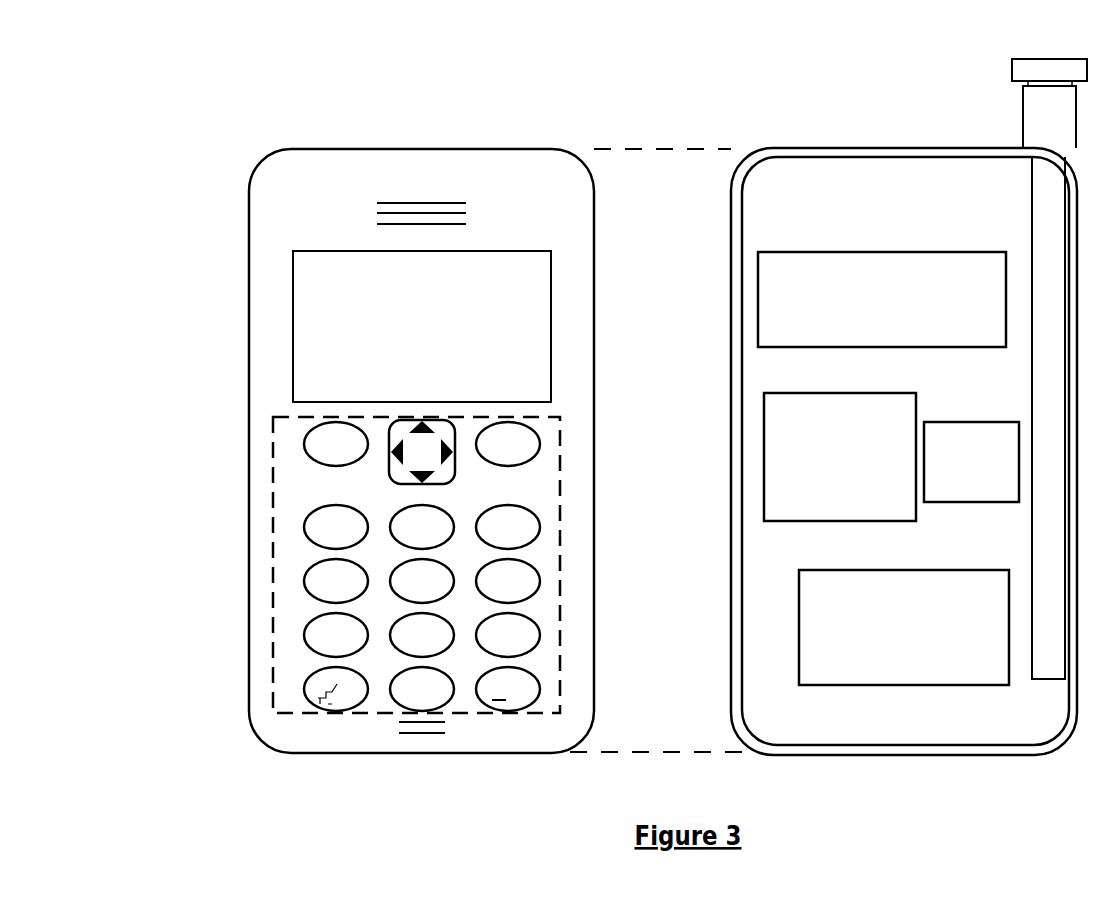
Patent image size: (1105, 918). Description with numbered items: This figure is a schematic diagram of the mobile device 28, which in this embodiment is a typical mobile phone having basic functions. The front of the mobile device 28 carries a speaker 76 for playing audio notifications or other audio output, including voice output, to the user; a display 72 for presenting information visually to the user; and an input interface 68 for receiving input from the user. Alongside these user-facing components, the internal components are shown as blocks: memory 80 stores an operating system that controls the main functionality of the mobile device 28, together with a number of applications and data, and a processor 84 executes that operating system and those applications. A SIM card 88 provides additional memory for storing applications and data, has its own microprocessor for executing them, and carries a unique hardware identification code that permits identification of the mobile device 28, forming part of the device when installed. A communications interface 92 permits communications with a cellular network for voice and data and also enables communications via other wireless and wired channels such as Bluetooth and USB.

The mobile device 28 is at (226, 142).
The speaker 76 is at (410, 180).
The display 72 is at (334, 341).
The input interface 68 is at (272, 560).
The memory 80 is at (882, 299).
The processor 84 is at (840, 457).
The SIM card 88 is at (971, 462).
The communications interface 92 is at (904, 627).